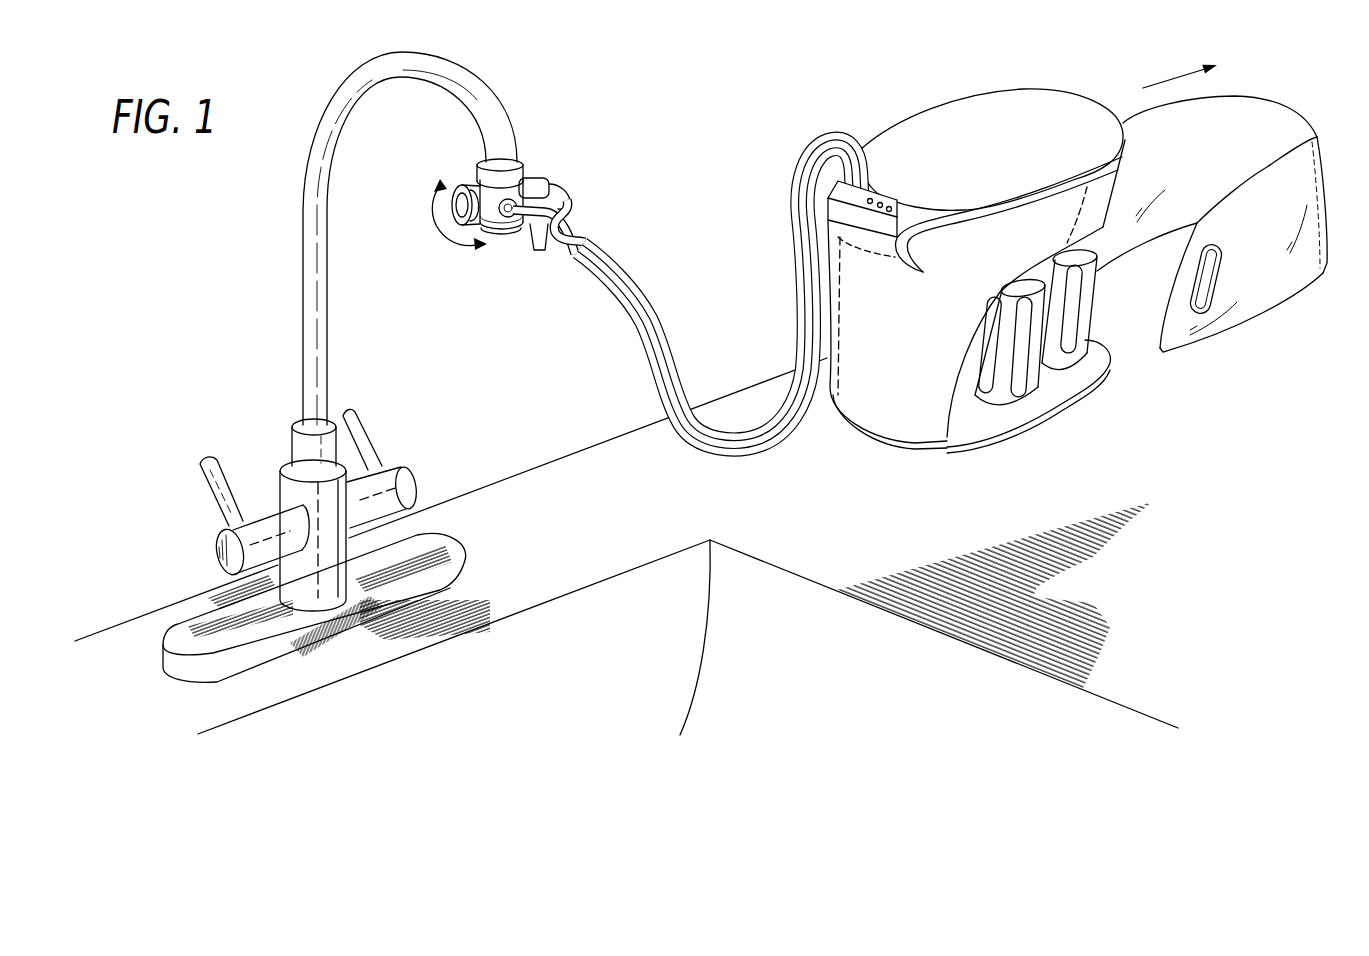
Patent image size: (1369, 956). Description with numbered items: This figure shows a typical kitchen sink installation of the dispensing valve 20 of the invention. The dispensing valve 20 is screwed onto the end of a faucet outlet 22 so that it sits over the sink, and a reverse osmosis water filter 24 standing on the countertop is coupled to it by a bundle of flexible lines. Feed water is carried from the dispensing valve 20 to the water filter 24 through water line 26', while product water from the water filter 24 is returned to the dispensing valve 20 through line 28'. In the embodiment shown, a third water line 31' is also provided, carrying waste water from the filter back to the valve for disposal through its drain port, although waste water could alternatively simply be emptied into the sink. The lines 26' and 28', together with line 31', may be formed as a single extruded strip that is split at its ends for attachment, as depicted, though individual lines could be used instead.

The dispensing valve 20 is at (535, 162).
The faucet outlet 22 is at (414, 63).
The reverse osmosis water filter 24 is at (910, 128).
The water line 26' is at (705, 294).
The line 28' is at (559, 263).
The third water line 31' is at (661, 286).